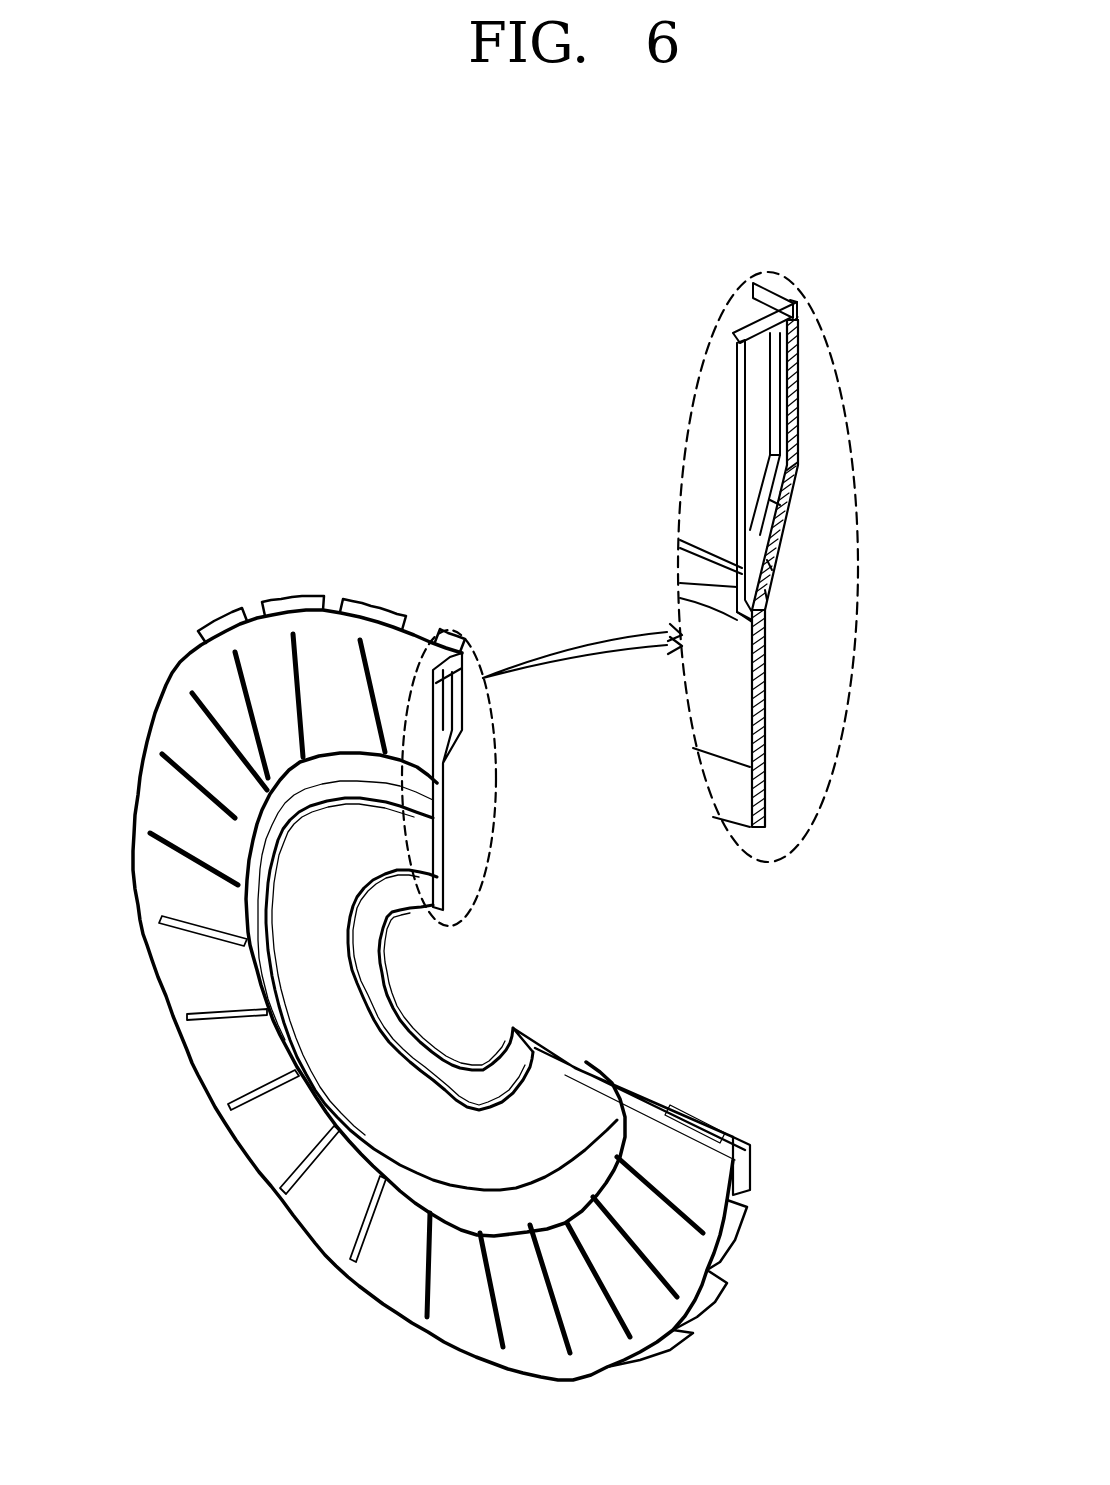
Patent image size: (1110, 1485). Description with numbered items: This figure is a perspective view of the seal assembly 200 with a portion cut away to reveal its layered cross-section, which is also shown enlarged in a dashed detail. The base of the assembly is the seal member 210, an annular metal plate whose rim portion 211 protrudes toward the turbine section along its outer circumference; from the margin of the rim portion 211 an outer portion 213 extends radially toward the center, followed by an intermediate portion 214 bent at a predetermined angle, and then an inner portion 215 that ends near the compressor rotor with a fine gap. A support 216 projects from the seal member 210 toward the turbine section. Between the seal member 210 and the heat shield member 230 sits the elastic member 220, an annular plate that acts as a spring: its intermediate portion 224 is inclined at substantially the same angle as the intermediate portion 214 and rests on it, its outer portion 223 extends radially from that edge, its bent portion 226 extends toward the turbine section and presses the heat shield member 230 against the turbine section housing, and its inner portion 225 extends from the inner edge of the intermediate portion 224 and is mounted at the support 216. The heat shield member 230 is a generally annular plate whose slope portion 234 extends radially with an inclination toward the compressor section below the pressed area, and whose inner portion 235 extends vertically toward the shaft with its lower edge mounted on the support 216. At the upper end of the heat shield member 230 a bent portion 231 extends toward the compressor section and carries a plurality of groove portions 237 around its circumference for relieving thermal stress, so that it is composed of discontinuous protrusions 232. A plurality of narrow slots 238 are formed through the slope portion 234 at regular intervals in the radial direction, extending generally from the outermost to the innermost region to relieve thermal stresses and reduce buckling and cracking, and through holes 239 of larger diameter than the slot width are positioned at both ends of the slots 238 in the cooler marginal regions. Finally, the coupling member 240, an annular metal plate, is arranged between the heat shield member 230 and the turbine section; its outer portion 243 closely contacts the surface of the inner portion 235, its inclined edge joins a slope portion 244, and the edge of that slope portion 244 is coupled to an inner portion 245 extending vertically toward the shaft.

The seal assembly 200 is at (192, 560).
The seal member 210 is at (830, 433).
The rim portion 211 is at (790, 298).
The outer portion 213 is at (795, 390).
The intermediate portion 214 is at (787, 483).
The inner portion 215 is at (767, 633).
The support 216 is at (767, 597).
The elastic member 220 is at (757, 391).
The outer portion 223 is at (783, 420).
The intermediate portion 224 is at (780, 503).
The inner portion 225 is at (767, 567).
The bent portion 226 is at (750, 328).
The heat shield member 230 is at (710, 475).
The bent portion 231 is at (757, 290).
The protrusions 232 is at (740, 1236).
The slope portion 234 is at (740, 410).
The inner portion 235 is at (737, 612).
The groove portions 237 is at (750, 1193).
The slots 238 is at (212, 937).
The through holes 239 is at (265, 1014).
The coupling member 240 is at (722, 707).
The outer portion 243 is at (737, 572).
The slope portion 244 is at (737, 623).
The inner portion 245 is at (737, 737).